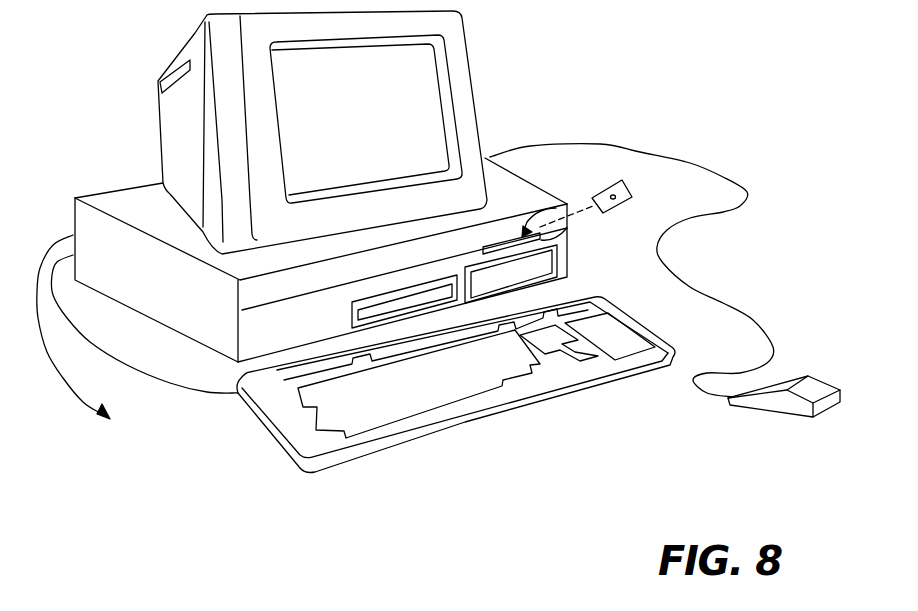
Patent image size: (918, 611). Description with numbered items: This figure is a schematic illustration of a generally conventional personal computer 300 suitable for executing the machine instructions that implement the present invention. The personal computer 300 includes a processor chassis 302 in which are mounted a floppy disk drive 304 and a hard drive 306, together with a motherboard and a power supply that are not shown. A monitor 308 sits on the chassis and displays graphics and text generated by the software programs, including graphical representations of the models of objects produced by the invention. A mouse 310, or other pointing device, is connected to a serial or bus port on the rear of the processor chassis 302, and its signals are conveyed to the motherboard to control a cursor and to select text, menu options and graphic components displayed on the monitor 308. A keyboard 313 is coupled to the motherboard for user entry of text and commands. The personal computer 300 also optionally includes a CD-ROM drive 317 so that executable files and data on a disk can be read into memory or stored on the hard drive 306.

The personal computer 300 is at (469, 438).
The processor chassis 302 is at (566, 220).
The floppy disk drive 304 is at (571, 197).
The hard drive 306 is at (537, 268).
The monitor 308 is at (470, 77).
The mouse 310 is at (815, 417).
The keyboard 313 is at (558, 400).
The CD-ROM drive 317 is at (352, 313).